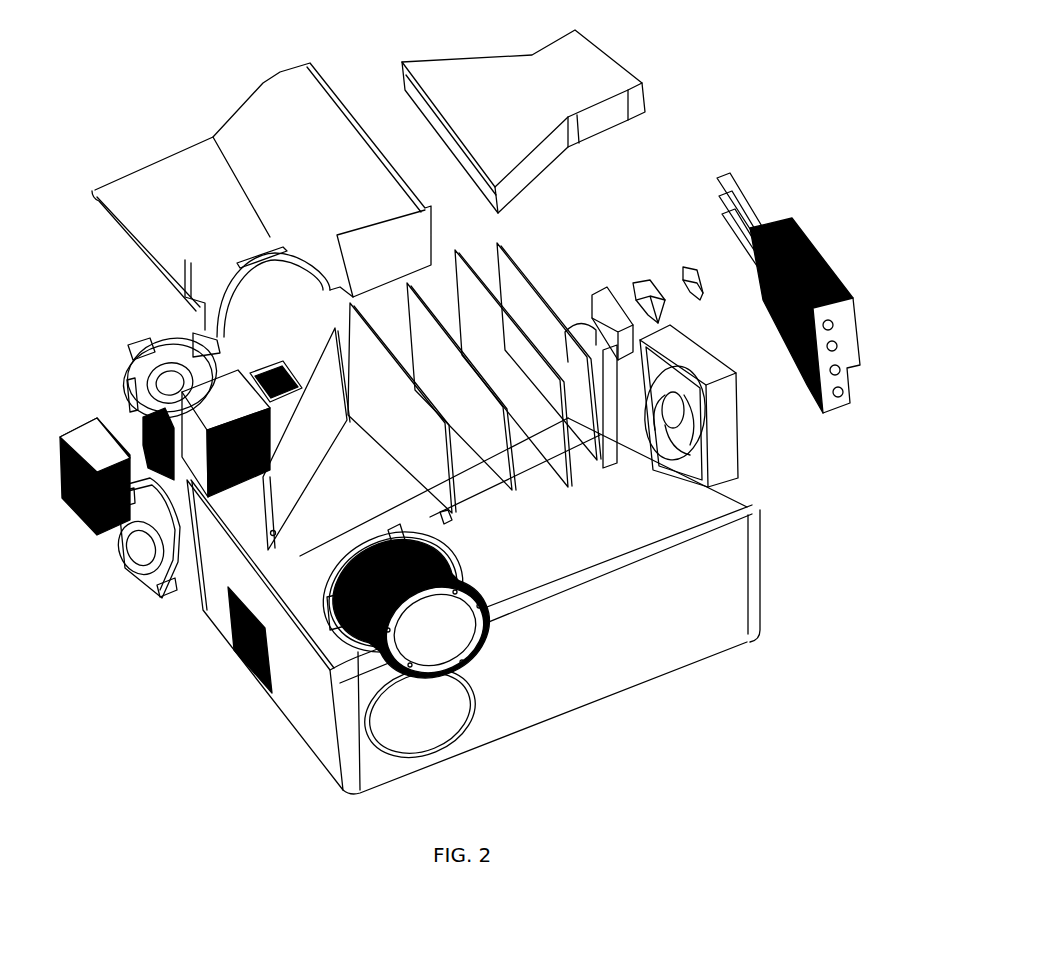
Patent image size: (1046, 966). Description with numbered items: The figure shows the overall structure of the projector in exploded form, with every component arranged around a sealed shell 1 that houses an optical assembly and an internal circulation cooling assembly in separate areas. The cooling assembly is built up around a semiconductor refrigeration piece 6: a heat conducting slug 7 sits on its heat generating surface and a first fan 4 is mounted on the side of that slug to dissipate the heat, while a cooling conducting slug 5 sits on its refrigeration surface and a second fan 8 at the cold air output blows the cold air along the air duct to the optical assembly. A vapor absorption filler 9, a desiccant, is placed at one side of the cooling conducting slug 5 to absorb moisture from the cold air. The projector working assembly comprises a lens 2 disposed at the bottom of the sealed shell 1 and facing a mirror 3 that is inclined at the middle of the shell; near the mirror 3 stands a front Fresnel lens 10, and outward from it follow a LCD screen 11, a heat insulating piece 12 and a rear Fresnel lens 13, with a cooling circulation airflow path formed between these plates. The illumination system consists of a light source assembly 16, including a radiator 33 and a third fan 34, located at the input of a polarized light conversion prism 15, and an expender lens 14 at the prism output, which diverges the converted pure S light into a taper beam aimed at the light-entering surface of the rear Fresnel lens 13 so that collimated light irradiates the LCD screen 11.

The sealed shell 1 is at (315, 690).
The lens 2 is at (246, 668).
The mirror 3 is at (270, 536).
The first fan 4 is at (128, 553).
The cooling conducting slug 5 is at (117, 363).
The semiconductor refrigeration piece 6 is at (143, 437).
The heat conducting slug 7 is at (73, 500).
The second fan 8 is at (157, 352).
The vapor absorption filler 9 is at (265, 367).
The front Fresnel lens 10 is at (423, 440).
The LCD screen 11 is at (487, 427).
The heat insulating piece 12 is at (548, 407).
The rear Fresnel lens 13 is at (588, 417).
The expender lens 14 is at (606, 300).
The polarized light conversion prism 15 is at (650, 287).
The light source assembly 16 is at (697, 273).
The radiator 33 is at (758, 222).
The third fan 34 is at (736, 430).